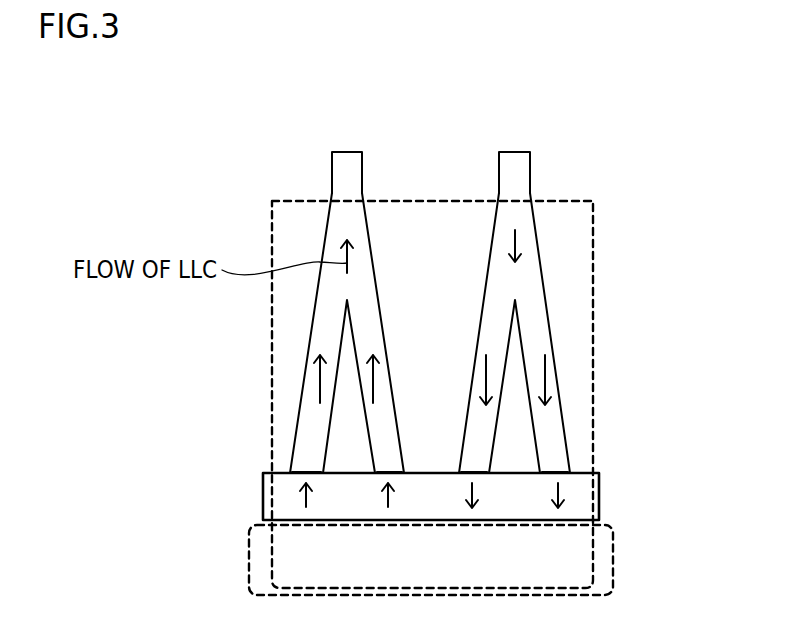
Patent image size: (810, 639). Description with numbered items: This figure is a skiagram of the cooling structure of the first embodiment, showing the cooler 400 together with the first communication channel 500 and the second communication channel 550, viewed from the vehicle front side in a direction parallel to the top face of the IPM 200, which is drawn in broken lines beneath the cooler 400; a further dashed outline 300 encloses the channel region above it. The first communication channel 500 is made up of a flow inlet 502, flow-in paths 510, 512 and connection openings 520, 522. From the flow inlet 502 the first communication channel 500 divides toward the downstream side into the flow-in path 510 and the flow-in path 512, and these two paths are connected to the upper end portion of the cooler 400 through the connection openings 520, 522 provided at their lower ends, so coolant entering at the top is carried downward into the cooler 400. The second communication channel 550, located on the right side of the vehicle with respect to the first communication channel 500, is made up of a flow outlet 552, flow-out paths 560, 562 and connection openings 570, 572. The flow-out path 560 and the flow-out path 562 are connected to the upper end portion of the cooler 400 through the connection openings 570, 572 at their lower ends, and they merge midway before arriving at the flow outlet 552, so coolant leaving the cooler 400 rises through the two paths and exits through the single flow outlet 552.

The IPM 200 is at (613, 556).
The housing (dashed) 300 is at (593, 254).
The cooler 400 is at (599, 490).
The first communication channel 500 is at (540, 250).
The flow inlet 502 is at (515, 152).
The flow-in path 510 is at (556, 370).
The flow-in path 512 is at (475, 362).
The connection opening 520 is at (560, 473).
The connection opening 522 is at (468, 473).
The second communication channel 550 is at (326, 249).
The flow outlet 552 is at (347, 152).
The flow-out path 560 is at (392, 389).
The flow-out path 562 is at (304, 378).
The connection opening 570 is at (383, 473).
The connection opening 572 is at (305, 473).